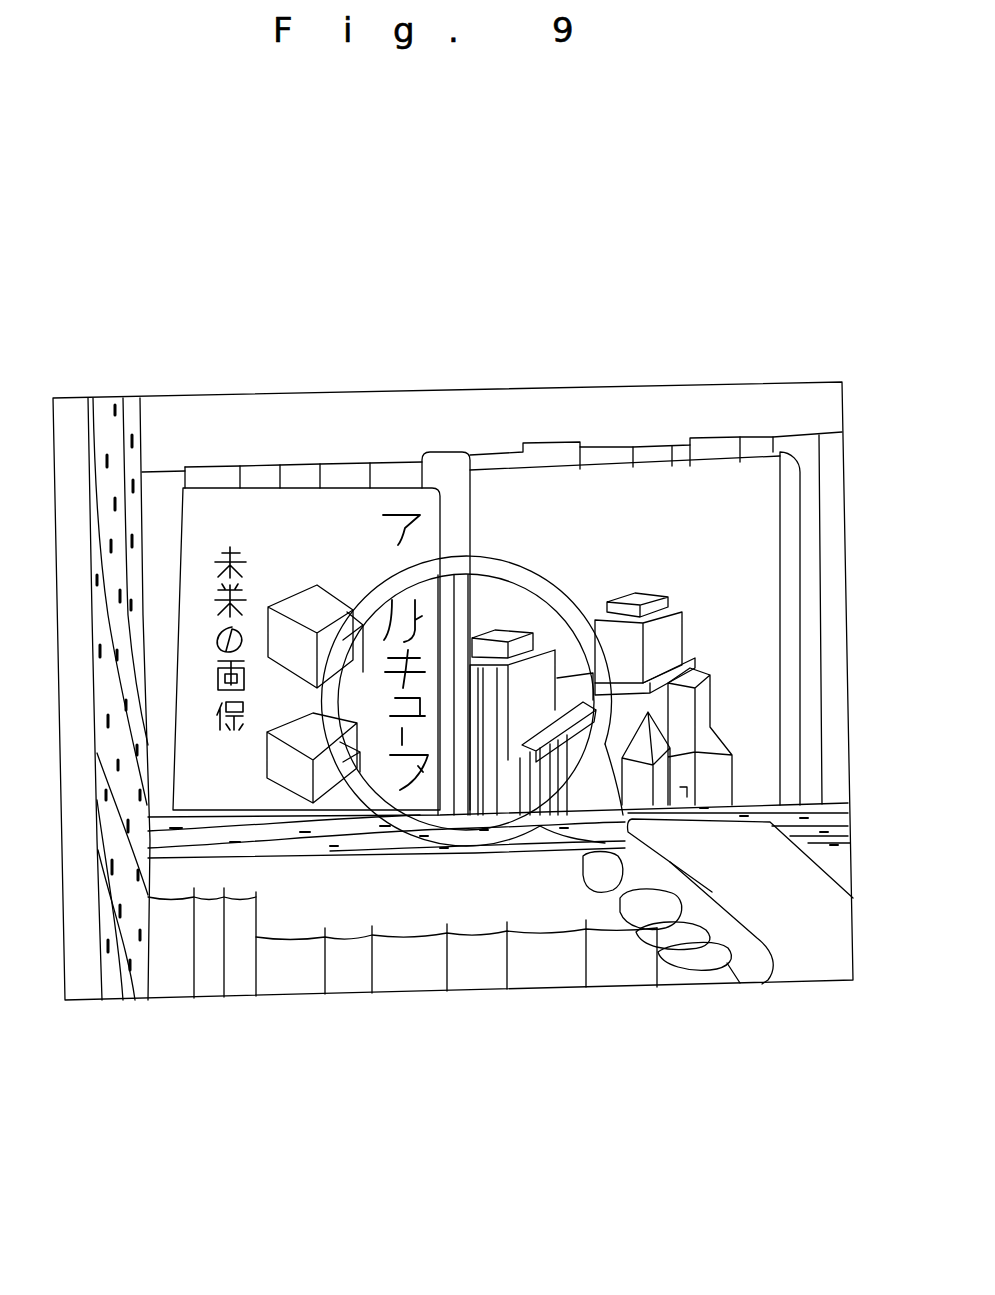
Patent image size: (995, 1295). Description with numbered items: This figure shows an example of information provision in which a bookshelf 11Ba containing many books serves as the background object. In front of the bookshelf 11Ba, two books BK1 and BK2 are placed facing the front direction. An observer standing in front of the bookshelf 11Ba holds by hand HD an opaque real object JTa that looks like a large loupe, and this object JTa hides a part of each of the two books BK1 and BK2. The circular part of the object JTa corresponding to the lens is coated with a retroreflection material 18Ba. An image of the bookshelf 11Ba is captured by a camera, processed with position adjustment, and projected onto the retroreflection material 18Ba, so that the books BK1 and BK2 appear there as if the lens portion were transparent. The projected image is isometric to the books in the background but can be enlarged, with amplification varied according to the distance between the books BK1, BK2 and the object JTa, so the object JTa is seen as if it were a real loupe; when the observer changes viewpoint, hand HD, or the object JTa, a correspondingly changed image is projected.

The bookshelf 11Ba is at (113, 435).
The book BK1 is at (317, 507).
The book BK2 is at (618, 477).
The retroreflection material 18Ba is at (423, 787).
The real object JTa is at (573, 820).
The hand HD is at (803, 883).